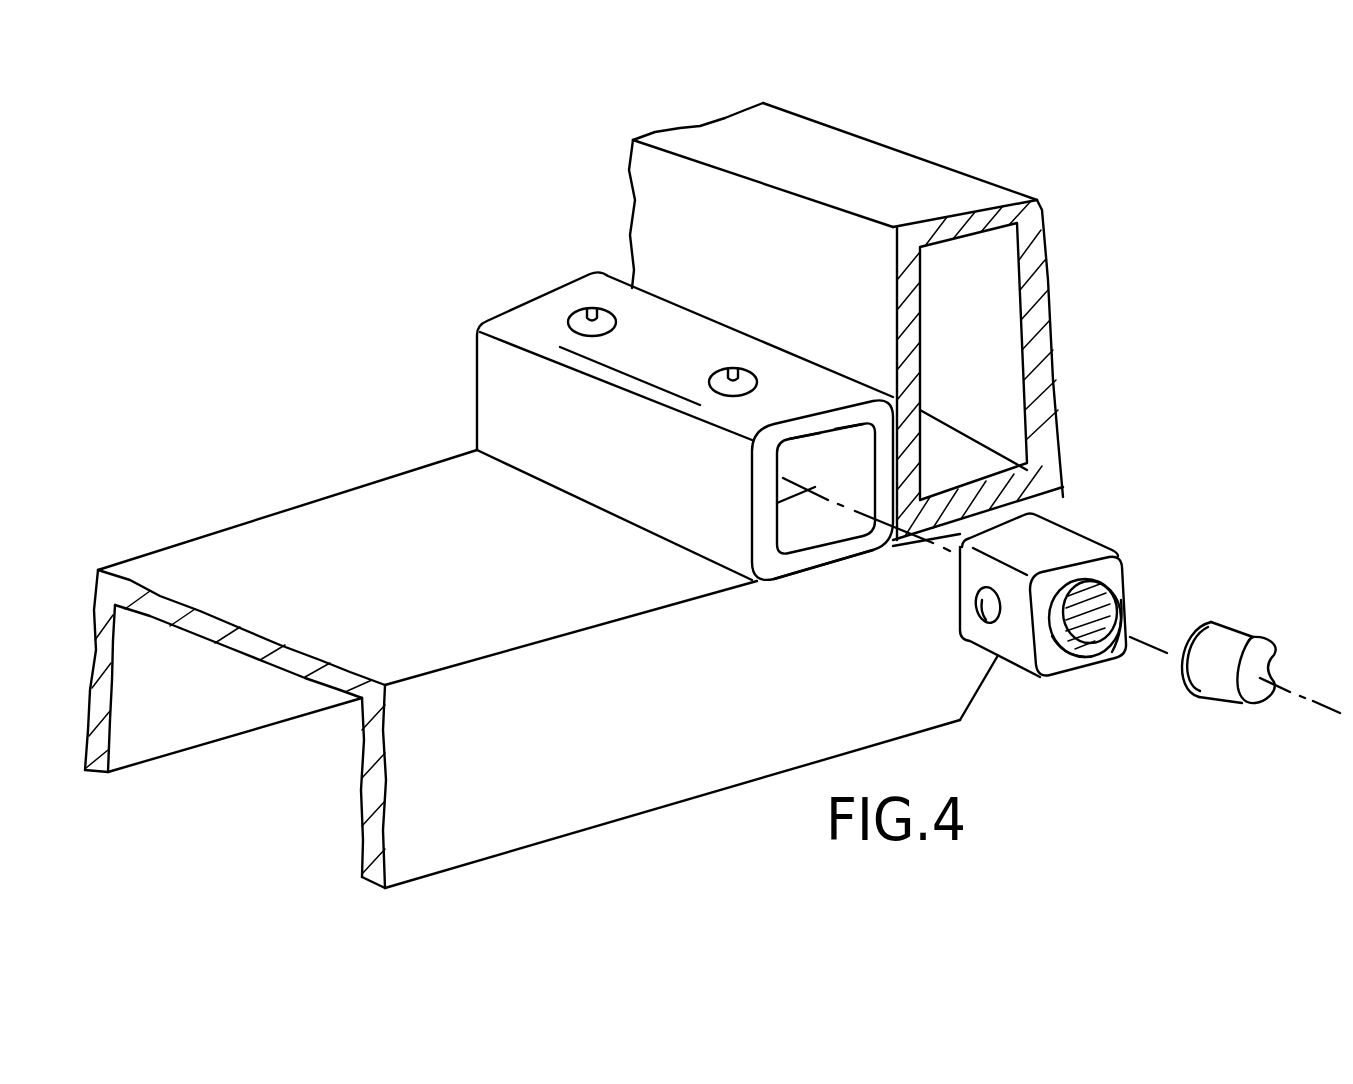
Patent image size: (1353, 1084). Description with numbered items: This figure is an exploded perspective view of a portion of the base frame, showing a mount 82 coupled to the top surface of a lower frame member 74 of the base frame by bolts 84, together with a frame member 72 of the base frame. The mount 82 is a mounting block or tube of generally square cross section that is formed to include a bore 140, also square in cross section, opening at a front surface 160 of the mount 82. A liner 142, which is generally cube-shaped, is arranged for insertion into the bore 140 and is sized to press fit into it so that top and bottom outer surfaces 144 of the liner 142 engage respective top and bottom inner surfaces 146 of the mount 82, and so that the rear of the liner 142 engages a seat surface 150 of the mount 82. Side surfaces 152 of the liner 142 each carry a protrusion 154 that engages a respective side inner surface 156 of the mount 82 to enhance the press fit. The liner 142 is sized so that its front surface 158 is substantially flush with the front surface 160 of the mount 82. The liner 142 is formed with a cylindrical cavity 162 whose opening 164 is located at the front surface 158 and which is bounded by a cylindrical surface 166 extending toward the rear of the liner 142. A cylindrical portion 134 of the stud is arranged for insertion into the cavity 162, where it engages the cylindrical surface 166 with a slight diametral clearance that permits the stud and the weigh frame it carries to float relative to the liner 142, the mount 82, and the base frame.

The tubular frame member 72 is at (820, 145).
The frame member 74 is at (222, 533).
The mount 82 is at (678, 440).
The bolts 84 is at (573, 318).
The cylindrical portion 134 is at (1220, 678).
The bore 140 is at (817, 525).
The liner 142 is at (1074, 582).
The top and bottom outer surfaces 144 is at (1060, 550).
The top and bottom inner surfaces 146 is at (790, 522).
The seat surface 150 is at (818, 492).
The side surfaces 152 is at (1007, 637).
The protrusion 154 is at (980, 613).
The side inner surfaces 156 is at (852, 458).
The front surface 158 is at (1117, 573).
The front surface 160 is at (788, 567).
The cylindrical cavity 162 is at (1094, 657).
The opening 164 is at (1103, 607).
The cylindrical surface 166 is at (1130, 637).